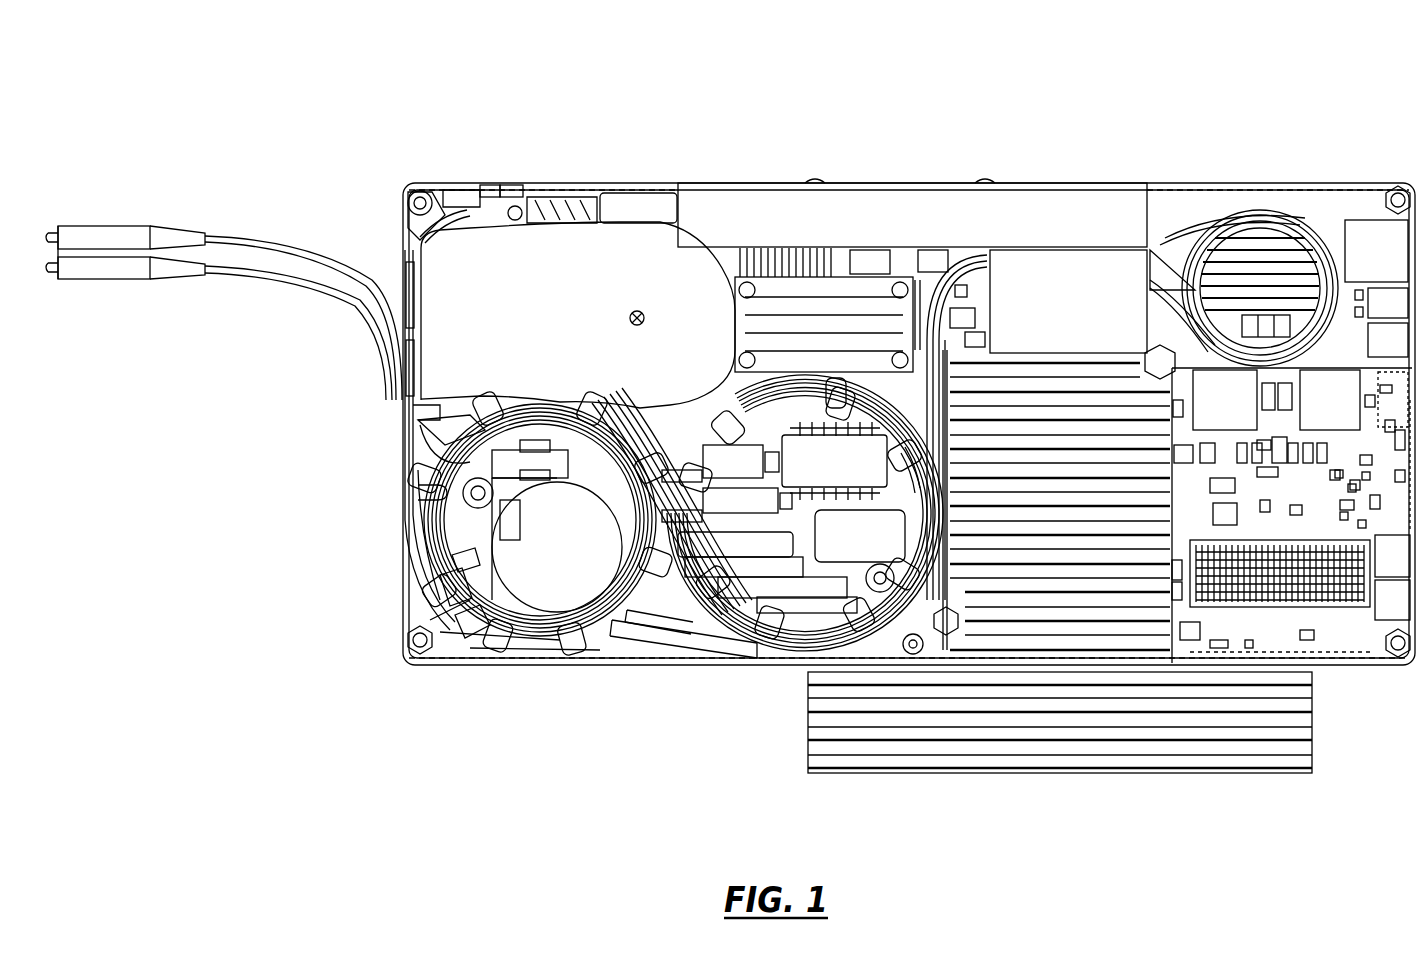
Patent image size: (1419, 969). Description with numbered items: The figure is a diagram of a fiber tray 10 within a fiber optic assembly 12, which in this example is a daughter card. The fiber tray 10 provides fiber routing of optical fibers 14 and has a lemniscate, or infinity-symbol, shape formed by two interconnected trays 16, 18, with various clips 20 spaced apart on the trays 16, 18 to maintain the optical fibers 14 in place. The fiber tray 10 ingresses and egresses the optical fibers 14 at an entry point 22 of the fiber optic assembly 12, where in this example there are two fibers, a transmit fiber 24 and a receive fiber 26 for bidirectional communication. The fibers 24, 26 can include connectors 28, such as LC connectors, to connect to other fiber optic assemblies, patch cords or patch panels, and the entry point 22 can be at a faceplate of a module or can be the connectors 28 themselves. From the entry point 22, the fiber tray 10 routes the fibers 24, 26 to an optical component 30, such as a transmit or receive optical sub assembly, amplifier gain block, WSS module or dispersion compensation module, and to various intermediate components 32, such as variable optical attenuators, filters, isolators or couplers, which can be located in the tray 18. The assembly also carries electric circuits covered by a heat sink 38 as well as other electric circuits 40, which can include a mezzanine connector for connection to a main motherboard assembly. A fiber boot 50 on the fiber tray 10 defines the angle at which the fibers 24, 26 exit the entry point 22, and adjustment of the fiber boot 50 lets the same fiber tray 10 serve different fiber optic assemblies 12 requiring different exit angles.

The fiber tray 10 is at (522, 690).
The fiber optic assembly 12 is at (945, 85).
The optical fibers 14 is at (507, 607).
The first tray 16 is at (443, 590).
The second tray 18 is at (777, 643).
The clips 20 is at (430, 492).
The entry point 22 is at (398, 422).
The transmit (TX) fiber 24 is at (230, 240).
The receive (RX) fiber 26 is at (250, 270).
The connectors 28 is at (105, 210).
The optical component 30 is at (885, 188).
The intermediate components 32 is at (845, 474).
The heat sink 38 is at (1068, 740).
The electric circuits 40 is at (1317, 607).
The fiber boot 50 is at (453, 627).